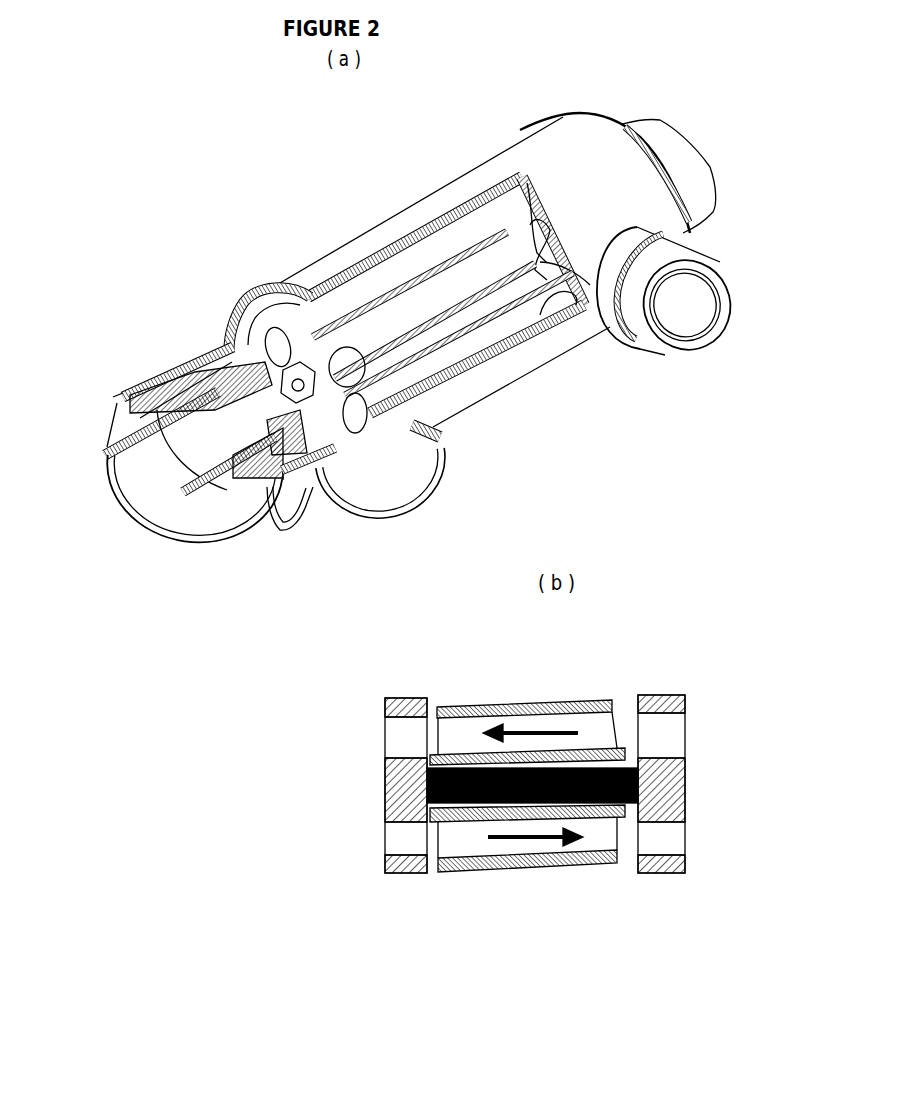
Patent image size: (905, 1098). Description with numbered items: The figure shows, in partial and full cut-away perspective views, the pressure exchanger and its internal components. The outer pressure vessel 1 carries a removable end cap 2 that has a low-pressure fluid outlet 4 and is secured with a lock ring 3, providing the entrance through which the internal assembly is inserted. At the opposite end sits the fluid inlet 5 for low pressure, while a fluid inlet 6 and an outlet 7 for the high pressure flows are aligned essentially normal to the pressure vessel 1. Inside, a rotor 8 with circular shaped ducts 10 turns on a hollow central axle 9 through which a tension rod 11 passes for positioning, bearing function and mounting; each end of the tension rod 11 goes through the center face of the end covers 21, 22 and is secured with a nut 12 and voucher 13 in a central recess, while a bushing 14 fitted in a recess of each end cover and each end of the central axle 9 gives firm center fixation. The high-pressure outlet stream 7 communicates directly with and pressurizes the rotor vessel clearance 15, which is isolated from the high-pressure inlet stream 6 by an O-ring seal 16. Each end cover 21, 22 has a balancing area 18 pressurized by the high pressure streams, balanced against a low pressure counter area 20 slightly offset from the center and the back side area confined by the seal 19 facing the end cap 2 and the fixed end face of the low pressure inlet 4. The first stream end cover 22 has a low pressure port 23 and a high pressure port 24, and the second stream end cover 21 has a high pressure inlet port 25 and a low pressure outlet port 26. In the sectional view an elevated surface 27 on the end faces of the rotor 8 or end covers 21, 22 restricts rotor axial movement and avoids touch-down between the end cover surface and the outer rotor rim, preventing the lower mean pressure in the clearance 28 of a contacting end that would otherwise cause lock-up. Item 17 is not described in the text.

The pressure vessel 1 is at (567, 157).
The end cap 2 is at (230, 505).
The lock ring 3 is at (263, 503).
The low-pressure fluid outlet 4 is at (140, 477).
The fluid inlet for low pressure 5 is at (683, 155).
The high-pressure fluid inlet 6 is at (397, 487).
The high-pressure fluid outlet 7 is at (683, 293).
The rotor 8 is at (430, 372).
The hollow central axle 9 is at (470, 280).
The circular shaped ducts 10 is at (247, 335).
The tension rod 11 is at (257, 358).
The nut 12 is at (282, 295).
The voucher 13 is at (362, 266).
The bushing 14 is at (427, 390).
The rotor vessel clearance 15 is at (548, 330).
The O-ring seal 16 is at (248, 315).
The connecting pipe 17 is at (147, 395).
The balancing area 18 is at (313, 488).
The seal 19 is at (180, 375).
The low pressure counter area 20 is at (150, 407).
The second stream end cover 21 is at (213, 430).
The first stream end cover 22 is at (520, 210).
The low pressure port 23 is at (487, 215).
The high pressure port 24 is at (553, 300).
The high pressure inlet port 25 is at (440, 470).
The low pressure outlet port 26 is at (215, 325).
The elevated surface 27 is at (620, 748).
The clearance 28 is at (437, 752).